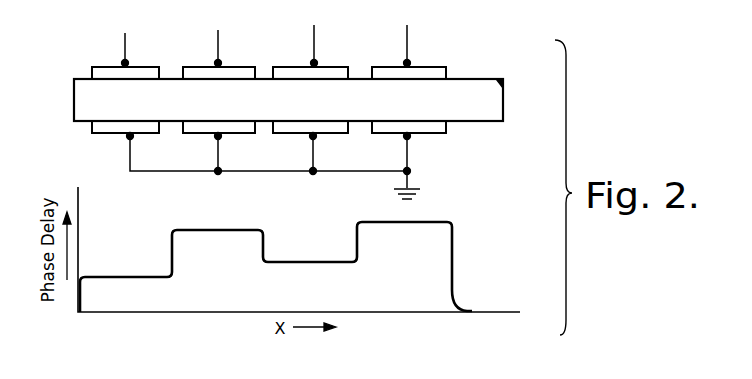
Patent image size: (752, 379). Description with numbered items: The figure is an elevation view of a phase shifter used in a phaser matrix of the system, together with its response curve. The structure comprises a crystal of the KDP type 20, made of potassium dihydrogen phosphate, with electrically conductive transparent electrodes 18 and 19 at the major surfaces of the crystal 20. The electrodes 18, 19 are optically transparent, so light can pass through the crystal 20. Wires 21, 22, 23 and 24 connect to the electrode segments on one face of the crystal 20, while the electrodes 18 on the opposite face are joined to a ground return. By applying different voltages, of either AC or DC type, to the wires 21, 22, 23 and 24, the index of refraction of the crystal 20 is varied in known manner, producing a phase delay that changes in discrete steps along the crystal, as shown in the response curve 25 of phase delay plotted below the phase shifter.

The electrically conductive transparent electrode 18 is at (138, 127).
The electrically conductive transparent electrode 19 is at (138, 72).
The crystal of the KDP type 20 is at (503, 80).
The wire 21 is at (125, 37).
The wire 22 is at (219, 44).
The wire 23 is at (314, 37).
The wire 24 is at (408, 37).
The curve 25 is at (435, 222).